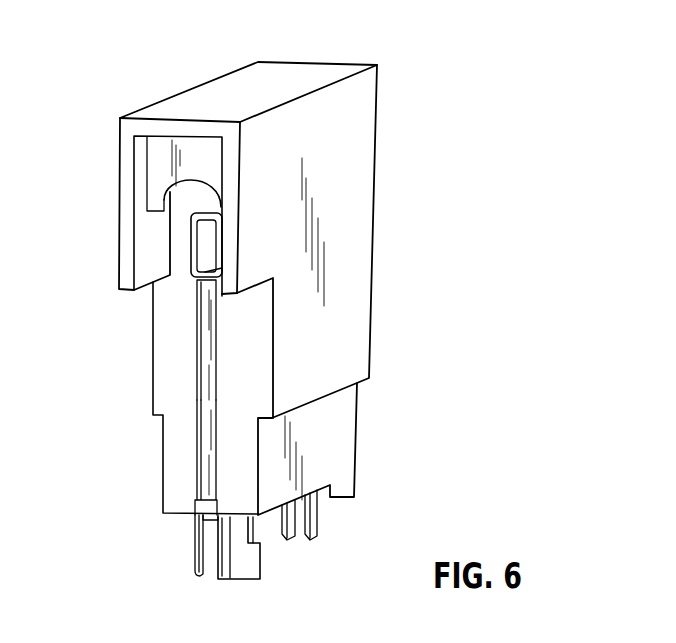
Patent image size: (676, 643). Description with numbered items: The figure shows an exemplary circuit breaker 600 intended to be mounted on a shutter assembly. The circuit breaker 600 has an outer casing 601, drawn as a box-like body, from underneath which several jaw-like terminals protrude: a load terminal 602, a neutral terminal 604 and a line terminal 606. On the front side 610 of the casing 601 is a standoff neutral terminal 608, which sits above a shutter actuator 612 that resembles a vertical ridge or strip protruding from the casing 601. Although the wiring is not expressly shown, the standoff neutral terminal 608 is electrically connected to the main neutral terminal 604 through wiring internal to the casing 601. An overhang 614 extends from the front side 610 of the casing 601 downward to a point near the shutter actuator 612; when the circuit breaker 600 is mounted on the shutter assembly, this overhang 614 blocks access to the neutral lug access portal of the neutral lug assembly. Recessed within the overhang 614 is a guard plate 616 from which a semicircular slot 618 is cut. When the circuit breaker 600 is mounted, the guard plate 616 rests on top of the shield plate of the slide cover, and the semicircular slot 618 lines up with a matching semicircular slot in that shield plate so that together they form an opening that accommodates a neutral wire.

The circuit breaker 600 is at (156, 80).
The outer casing 601 is at (373, 234).
The load terminal 602 is at (193, 540).
The neutral terminal 604 is at (260, 553).
The line terminal 606 is at (318, 515).
The standoff neutral terminal 608 is at (190, 255).
The front side 610 is at (170, 360).
The shutter actuator 612 is at (195, 453).
The overhang 614 is at (127, 182).
The guard plate 616 is at (155, 156).
The semicircular slot 618 is at (164, 202).